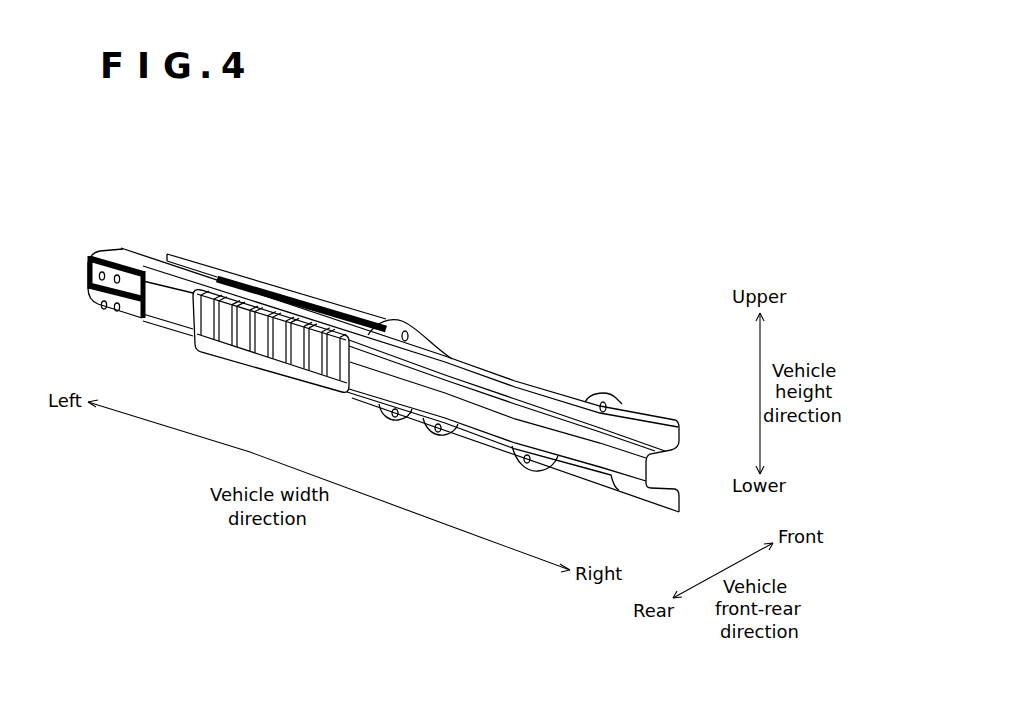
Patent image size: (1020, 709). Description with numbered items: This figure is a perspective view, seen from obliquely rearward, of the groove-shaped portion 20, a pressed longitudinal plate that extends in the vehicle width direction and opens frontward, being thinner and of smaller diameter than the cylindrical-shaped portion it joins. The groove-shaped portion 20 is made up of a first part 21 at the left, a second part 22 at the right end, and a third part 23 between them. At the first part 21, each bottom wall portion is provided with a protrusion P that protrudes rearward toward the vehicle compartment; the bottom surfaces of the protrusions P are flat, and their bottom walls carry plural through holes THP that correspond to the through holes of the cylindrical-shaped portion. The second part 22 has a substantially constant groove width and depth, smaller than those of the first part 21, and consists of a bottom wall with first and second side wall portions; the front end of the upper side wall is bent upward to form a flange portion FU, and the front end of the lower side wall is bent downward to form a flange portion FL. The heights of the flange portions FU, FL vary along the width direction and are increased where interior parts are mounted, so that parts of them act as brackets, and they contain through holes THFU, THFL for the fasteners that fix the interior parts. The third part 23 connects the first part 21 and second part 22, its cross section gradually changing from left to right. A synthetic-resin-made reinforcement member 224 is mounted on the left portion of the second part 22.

The groove-shaped portion 20 is at (263, 360).
The first part 21 is at (136, 254).
The second part 22 is at (465, 370).
The third part 23 is at (196, 262).
The reinforcement member 224 is at (272, 292).
The protrusion P is at (128, 312).
The flange portion FU is at (415, 328).
The flange portion FL is at (414, 428).
The through holes THP is at (102, 271).
The through holes THFU is at (405, 330).
The through holes THFL is at (394, 415).